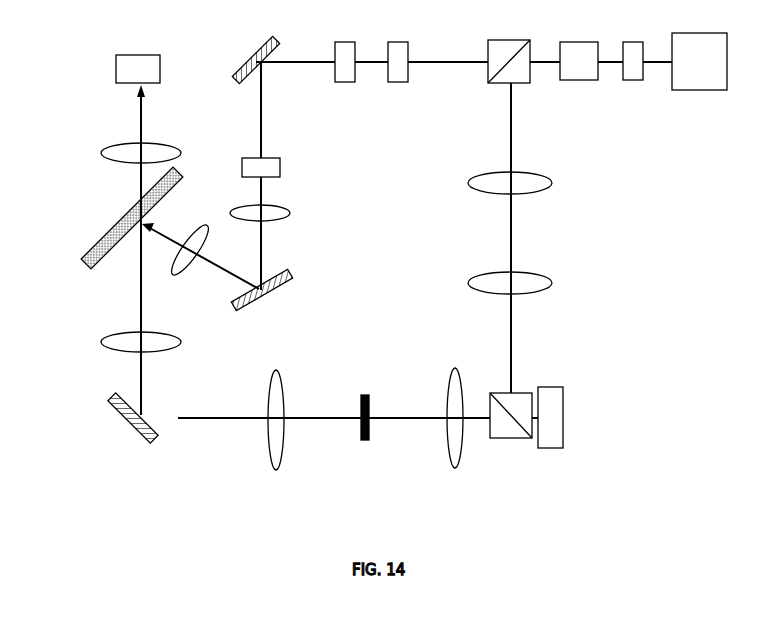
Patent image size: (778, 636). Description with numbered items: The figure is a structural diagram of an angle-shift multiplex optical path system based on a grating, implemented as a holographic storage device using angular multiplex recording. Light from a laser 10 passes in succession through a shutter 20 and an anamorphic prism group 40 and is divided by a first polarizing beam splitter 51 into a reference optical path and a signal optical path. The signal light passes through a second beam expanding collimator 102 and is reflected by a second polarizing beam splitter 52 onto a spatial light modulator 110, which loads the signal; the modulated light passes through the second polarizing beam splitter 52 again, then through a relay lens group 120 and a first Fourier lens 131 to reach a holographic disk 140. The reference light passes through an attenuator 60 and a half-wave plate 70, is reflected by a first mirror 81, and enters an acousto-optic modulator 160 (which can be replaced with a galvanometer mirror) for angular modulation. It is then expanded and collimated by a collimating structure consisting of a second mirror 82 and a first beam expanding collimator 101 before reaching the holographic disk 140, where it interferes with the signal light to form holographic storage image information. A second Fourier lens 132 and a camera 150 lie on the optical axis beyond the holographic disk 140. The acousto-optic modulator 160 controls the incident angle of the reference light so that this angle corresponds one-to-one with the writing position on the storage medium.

The laser 10 is at (699, 48).
The shutter 20 is at (630, 43).
The anamorphic prism group 40 is at (579, 43).
The first polarizing beam splitter 51 is at (509, 44).
The second polarizing beam splitter 52 is at (511, 434).
The attenuator 60 is at (397, 44).
The half-wave plate 70 is at (344, 44).
The first mirror 81 is at (255, 45).
The second mirror 82 is at (263, 297).
The first beam expanding collimator 101 is at (255, 194).
The second beam expanding collimator 102 is at (563, 168).
The spatial light modulator 110 is at (580, 417).
The relay lens group 120 is at (470, 478).
The first Fourier lens 131 is at (110, 345).
The second Fourier lens 132 is at (110, 156).
The holographic disk 140 is at (111, 220).
The camera 150 is at (138, 48).
The acousto-optic modulator (AOM) 160 is at (285, 170).